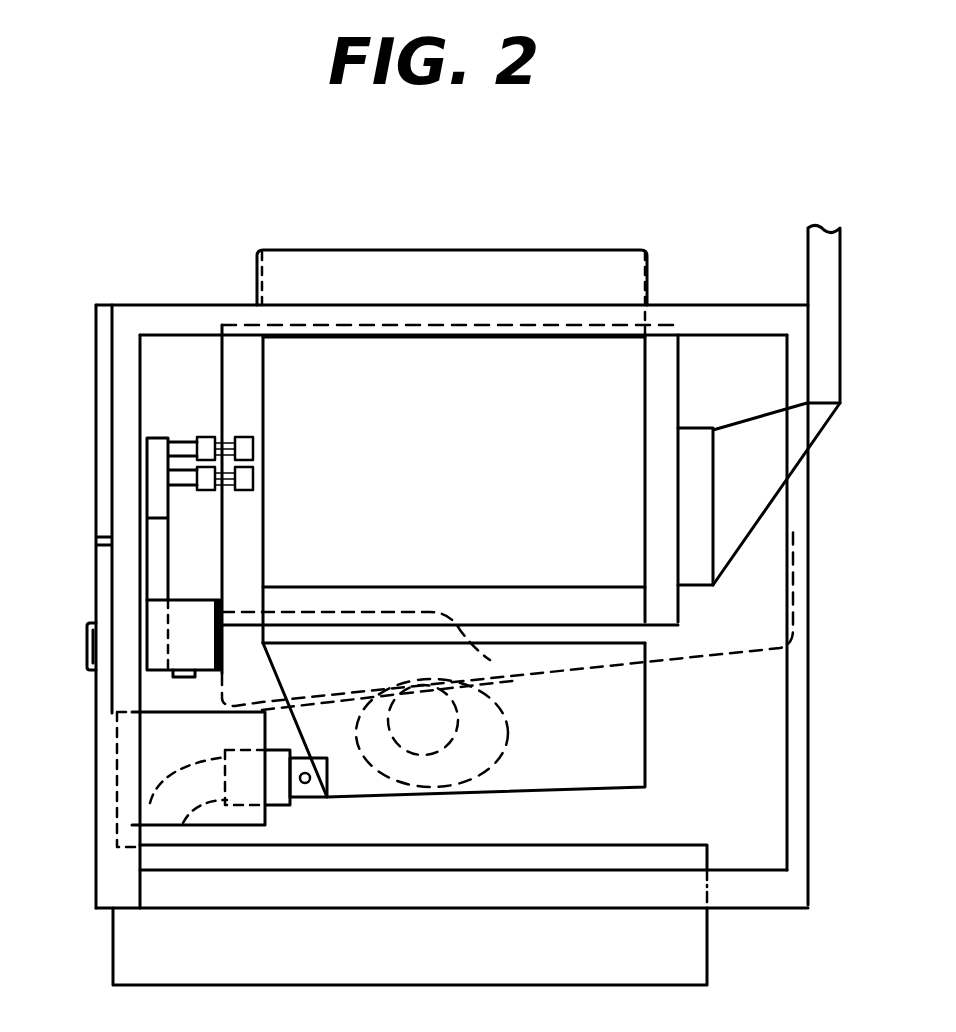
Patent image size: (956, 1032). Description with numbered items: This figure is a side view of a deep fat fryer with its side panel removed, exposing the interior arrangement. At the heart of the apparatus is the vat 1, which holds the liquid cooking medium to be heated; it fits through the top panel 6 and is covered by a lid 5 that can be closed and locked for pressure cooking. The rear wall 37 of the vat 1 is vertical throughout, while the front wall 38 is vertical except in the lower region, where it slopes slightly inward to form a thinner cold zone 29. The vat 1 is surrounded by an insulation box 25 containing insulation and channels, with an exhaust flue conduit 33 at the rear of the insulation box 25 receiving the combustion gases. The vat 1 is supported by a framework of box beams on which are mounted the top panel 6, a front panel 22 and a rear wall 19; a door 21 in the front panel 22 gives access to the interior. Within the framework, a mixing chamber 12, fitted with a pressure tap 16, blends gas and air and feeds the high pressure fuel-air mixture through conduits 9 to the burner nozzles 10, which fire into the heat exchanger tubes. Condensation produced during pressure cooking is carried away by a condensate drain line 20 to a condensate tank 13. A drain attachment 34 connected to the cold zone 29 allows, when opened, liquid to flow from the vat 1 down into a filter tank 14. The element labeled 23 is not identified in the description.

The vat 1 is at (645, 410).
The lid 5 is at (652, 254).
The top panel 6 is at (541, 303).
The conduits 9 is at (158, 463).
The burner nozzles 10 is at (253, 437).
The mixing chamber 12 is at (186, 613).
The condensate tank 13 is at (152, 742).
The filter tank 14 is at (690, 932).
The pressure tap 16 is at (180, 678).
The rear wall 19 is at (785, 767).
The condensate drain line 20 is at (673, 663).
The door 21 is at (107, 662).
The front panel 22 is at (132, 362).
The bottom panel 23 is at (333, 895).
The insulation box 25 is at (680, 348).
The cold zone 29 is at (535, 747).
The exhaust flue conduit 33 is at (736, 528).
The drain attachment 34 is at (277, 783).
The rear wall of the vat 37 is at (645, 492).
The front wall of the vat 38 is at (268, 540).